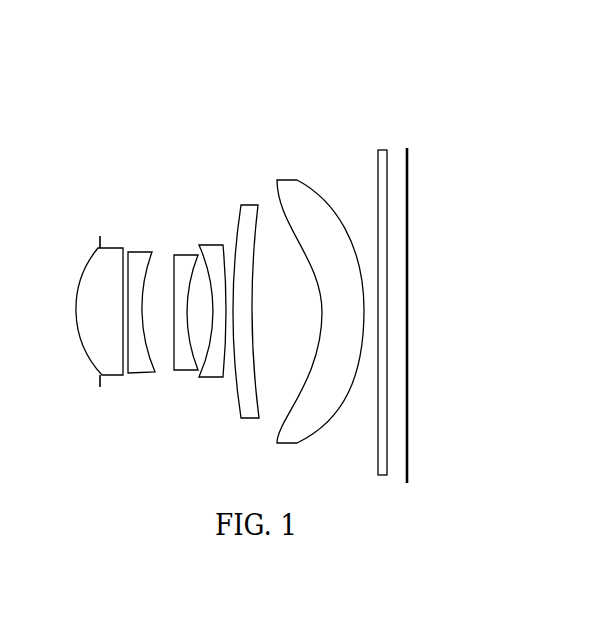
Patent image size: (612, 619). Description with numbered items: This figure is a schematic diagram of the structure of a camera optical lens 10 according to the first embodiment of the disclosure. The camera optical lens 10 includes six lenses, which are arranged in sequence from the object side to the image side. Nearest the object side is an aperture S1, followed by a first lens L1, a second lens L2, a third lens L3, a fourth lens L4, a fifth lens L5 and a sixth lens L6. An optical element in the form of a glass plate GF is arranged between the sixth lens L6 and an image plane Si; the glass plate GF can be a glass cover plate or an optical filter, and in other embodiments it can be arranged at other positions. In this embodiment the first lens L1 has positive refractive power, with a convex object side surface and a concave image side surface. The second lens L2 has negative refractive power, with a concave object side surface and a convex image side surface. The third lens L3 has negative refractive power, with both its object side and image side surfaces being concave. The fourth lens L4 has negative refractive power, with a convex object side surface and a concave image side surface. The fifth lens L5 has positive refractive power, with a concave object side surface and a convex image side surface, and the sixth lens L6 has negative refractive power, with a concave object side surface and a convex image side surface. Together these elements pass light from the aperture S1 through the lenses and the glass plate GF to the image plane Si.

The camera optical lens 10 is at (260, 63).
The aperture S1 is at (86, 311).
The first lens L1 is at (102, 302).
The second lens L2 is at (141, 304).
The third lens L3 is at (186, 302).
The fourth lens L4 is at (212, 300).
The fifth lens L5 is at (248, 301).
The sixth lens L6 is at (320, 301).
The glass plate GF is at (381, 302).
The image plane Si is at (410, 301).